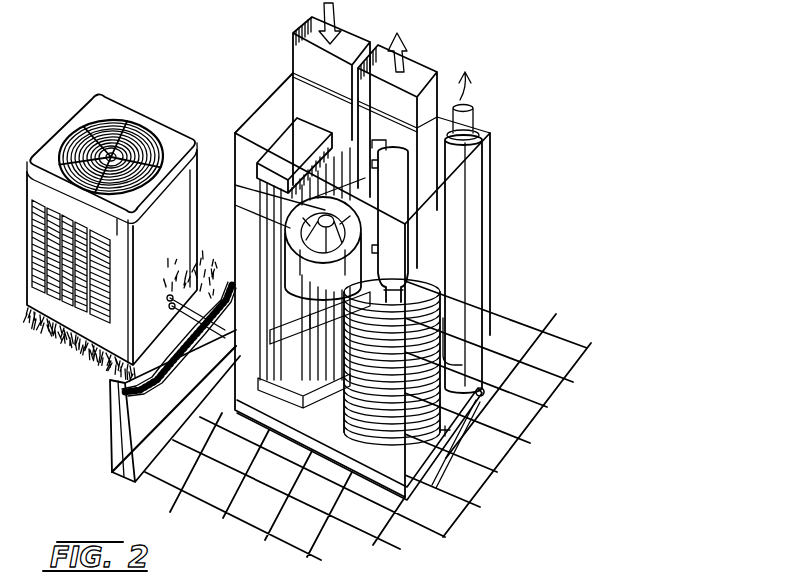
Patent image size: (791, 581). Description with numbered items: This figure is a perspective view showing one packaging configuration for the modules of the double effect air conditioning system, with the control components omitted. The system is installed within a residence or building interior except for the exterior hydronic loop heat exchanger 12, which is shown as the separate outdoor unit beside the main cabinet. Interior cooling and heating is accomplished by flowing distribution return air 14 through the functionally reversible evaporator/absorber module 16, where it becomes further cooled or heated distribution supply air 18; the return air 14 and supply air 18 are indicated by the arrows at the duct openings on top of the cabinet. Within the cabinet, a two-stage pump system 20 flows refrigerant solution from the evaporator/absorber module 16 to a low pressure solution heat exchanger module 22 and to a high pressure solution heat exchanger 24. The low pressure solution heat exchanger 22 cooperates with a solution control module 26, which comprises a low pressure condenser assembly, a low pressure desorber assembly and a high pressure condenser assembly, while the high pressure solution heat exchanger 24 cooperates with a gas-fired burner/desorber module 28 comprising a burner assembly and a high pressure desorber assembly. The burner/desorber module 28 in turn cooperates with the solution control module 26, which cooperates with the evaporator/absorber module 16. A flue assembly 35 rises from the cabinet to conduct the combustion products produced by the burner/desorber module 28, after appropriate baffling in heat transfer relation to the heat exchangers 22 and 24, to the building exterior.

The hydronic loop heat exchanger 12 is at (135, 117).
The distribution return air 14 is at (337, 10).
The evaporator/absorber module 16 is at (295, 147).
The distribution supply air 18 is at (403, 47).
The two-stage pump system 20 is at (322, 425).
The low pressure solution heat exchanger module 22 is at (478, 314).
The high pressure solution heat exchanger 24 is at (447, 392).
The solution control module 26 is at (410, 200).
The burner/desorber module 28 is at (443, 297).
The flue assembly 35 is at (488, 132).